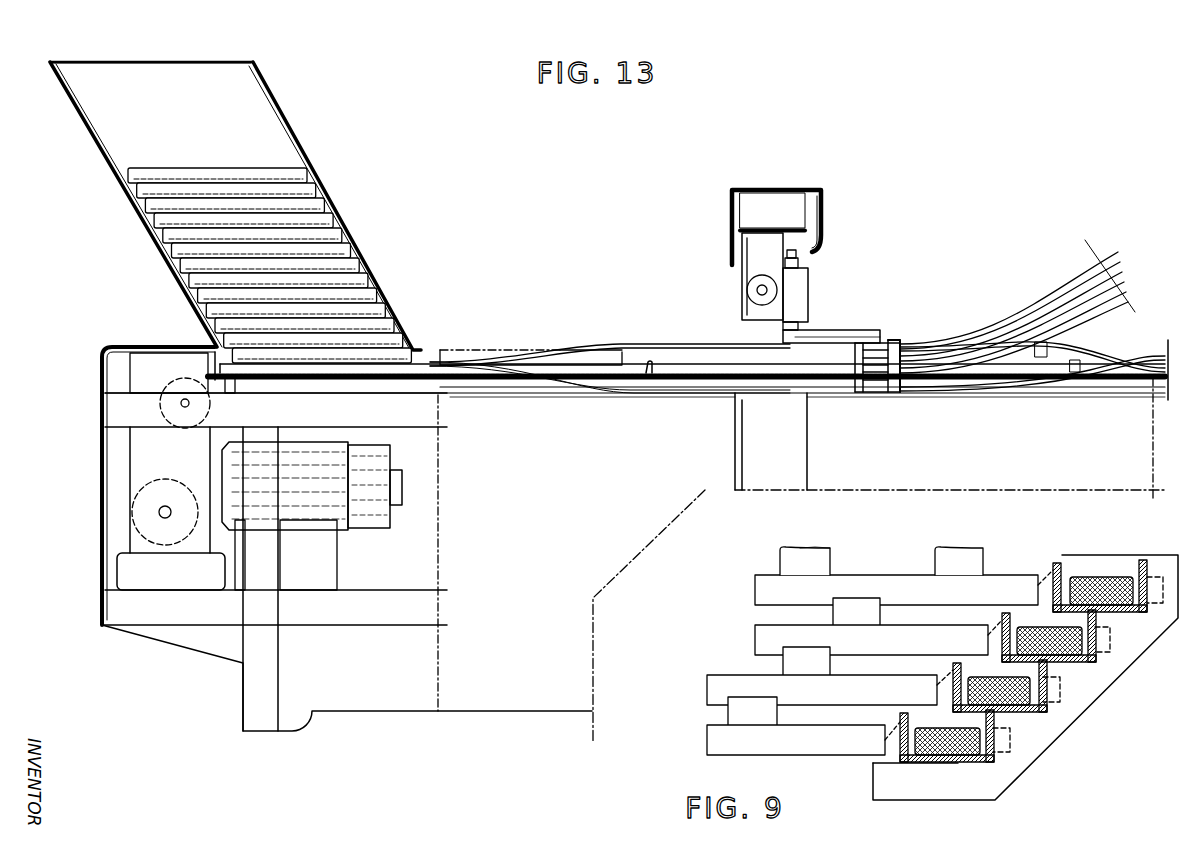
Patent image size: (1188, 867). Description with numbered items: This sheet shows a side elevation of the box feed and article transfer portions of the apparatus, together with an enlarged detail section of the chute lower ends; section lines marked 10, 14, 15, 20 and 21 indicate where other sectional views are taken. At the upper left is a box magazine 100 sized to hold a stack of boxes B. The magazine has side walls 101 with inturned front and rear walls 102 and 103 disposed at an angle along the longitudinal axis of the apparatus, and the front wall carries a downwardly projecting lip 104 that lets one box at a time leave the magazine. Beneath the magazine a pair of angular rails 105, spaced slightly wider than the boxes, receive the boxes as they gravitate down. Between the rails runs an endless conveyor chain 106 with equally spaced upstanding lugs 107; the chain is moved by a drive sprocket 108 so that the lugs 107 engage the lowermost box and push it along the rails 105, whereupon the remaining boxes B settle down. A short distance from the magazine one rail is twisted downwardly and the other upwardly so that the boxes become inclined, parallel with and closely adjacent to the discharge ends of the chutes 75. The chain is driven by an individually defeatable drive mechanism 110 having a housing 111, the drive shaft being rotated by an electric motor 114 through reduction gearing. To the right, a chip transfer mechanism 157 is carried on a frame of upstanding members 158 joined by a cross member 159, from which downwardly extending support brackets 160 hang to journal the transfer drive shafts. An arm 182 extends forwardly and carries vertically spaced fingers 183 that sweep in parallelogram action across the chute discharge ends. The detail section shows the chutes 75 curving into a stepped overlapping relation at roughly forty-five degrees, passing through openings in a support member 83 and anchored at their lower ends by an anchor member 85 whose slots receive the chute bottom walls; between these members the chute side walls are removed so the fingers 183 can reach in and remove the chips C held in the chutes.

In FIG. 13, the box magazine 100 is at (342, 200).
In FIG. 13, the side wall 101 is at (176, 72).
In FIG. 13, the front wall 102 is at (281, 108).
In FIG. 13, the rear wall 103 is at (108, 155).
In FIG. 13, the box B is at (200, 188).
In FIG. 13, the downwardly projecting lip 104 is at (418, 352).
In FIG. 13, the angular rail 105 is at (576, 382).
In FIG. 13, the endless conveyor chain 106 is at (348, 382).
In FIG. 13, the upstanding lug 107 is at (645, 374).
In FIG. 13, the drive sprocket 108 is at (200, 405).
In FIG. 13, the drive mechanism 110 is at (128, 478).
In FIG. 13, the housing 111 is at (128, 447).
In FIG. 13, the electric motor 114 is at (374, 528).
In FIG. 13, the chip transfer mechanism 157 is at (814, 281).
In FIG. 13, the upstanding member 158 is at (795, 424).
In FIG. 13, the cross member 159 is at (780, 188).
In FIG. 13, the support bracket 160 is at (748, 254).
In FIG. 13, the arm 182 is at (836, 328).
In FIG. 13, the anchor member 85 is at (862, 340).
In FIG. 9, the anchor member 85 is at (1035, 744).
In FIG. 13, the support member 83 is at (898, 338).
In FIG. 13, the chute 75 is at (1106, 260).
In FIG. 9, the chute 75 is at (1140, 560).
In FIG. 9, the finger 183 is at (767, 636).
In FIG. 9, the cards held in channels C is at (1093, 577).
In FIG. 9, the section line 10- 10 is at (780, 590).
In FIG. 13, the section line 14- 14 is at (722, 450).
In FIG. 13, the section line 15- 15 is at (508, 322).
In FIG. 13, the section line 20- 20 is at (470, 312).
In FIG. 13, the section line 21- 21 is at (157, 585).